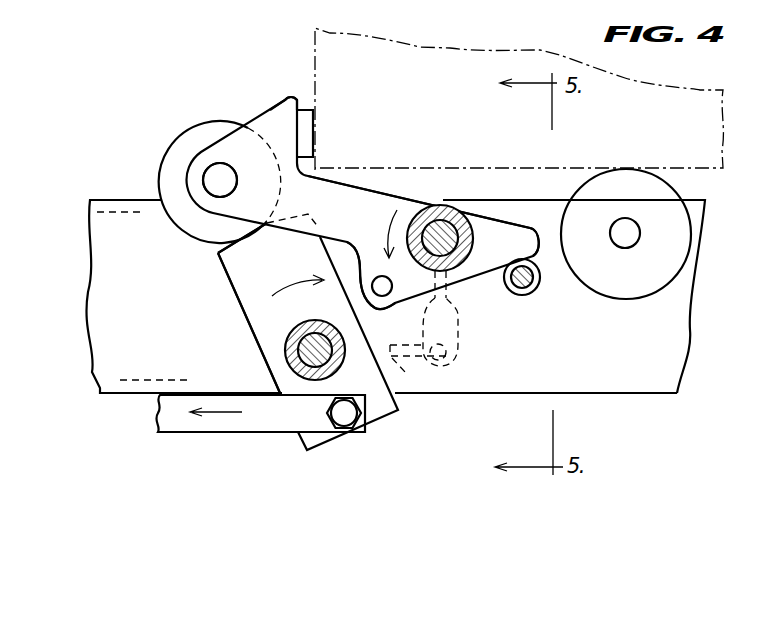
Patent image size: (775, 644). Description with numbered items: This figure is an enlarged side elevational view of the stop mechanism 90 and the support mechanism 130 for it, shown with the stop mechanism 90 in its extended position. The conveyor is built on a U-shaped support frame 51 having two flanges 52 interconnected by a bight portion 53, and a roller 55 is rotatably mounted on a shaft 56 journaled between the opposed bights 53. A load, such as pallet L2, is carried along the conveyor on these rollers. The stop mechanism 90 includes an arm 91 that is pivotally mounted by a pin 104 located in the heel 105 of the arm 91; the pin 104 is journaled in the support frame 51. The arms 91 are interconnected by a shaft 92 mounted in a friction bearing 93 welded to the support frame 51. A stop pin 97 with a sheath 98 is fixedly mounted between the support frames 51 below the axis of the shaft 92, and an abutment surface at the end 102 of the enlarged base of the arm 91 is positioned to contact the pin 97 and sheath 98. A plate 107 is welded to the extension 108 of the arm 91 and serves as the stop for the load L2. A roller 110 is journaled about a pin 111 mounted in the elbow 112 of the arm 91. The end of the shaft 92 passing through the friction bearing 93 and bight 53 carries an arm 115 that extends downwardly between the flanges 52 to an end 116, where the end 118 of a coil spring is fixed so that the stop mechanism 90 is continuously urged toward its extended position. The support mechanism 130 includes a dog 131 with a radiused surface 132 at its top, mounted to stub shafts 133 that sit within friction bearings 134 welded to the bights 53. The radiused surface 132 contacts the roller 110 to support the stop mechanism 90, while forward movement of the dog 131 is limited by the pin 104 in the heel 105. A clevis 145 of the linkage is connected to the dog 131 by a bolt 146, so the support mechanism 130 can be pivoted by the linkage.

The pallet L2 is at (443, 63).
The support frame 51 is at (691, 351).
The flange 52 is at (97, 213).
The bight portion 53 is at (695, 316).
The roller 55 is at (675, 195).
The shaft 56 is at (634, 242).
The stop mechanism 90 is at (344, 173).
The arm 91 is at (378, 181).
The shaft 92 is at (411, 214).
The friction bearing 93 is at (455, 216).
The stop pin 97 is at (532, 292).
The sheath 98 is at (540, 281).
The end of the enlarged base 102 is at (529, 231).
The pin 104 is at (391, 306).
The heel 105 is at (371, 291).
The plate 107 is at (304, 127).
The extension 108 is at (284, 101).
The roller 110 is at (191, 121).
The pin 111 is at (215, 176).
The elbow 112 is at (203, 184).
The arm 115 is at (448, 296).
The end 116 is at (459, 337).
The end of the coil spring 118 is at (399, 362).
The support mechanism 130 is at (264, 363).
The dog 131 is at (229, 284).
The radiused surface 132 is at (217, 253).
The stub shaft 133 is at (290, 336).
The friction bearing 134 is at (335, 362).
The clevis 145 is at (250, 424).
The bolt 146 is at (357, 428).